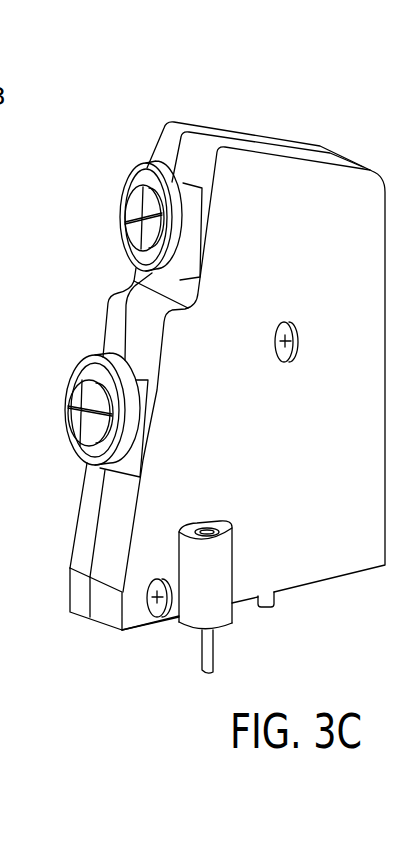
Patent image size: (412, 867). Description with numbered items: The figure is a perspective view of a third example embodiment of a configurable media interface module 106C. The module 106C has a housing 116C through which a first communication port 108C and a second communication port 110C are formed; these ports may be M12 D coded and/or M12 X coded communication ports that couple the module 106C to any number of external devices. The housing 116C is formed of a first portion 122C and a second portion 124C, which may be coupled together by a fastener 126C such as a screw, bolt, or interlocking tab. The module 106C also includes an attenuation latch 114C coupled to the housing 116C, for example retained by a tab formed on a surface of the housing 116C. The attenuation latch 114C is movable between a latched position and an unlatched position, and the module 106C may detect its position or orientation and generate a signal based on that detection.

The configurable media interface module 106C is at (360, 141).
The first communication port 108C is at (90, 377).
The second communication port 110C is at (148, 178).
The attenuation latch 114C is at (211, 654).
The housing 116C is at (117, 665).
The first portion 122C is at (78, 613).
The second portion 124C is at (115, 620).
The fastener 126C is at (297, 344).